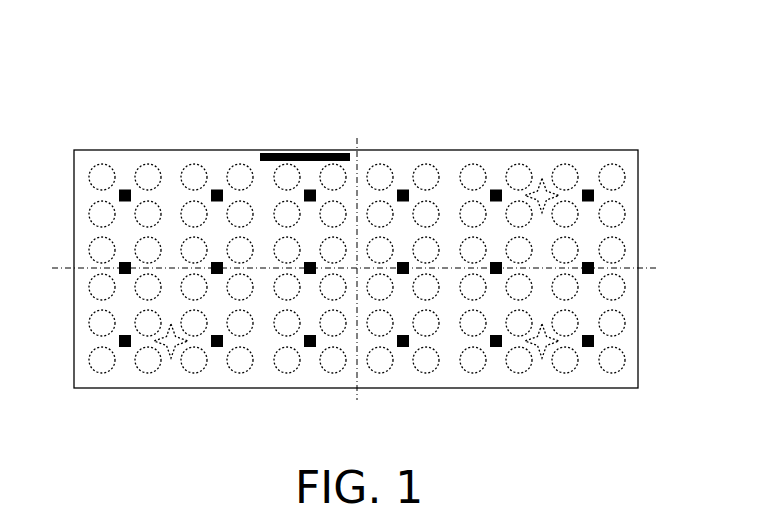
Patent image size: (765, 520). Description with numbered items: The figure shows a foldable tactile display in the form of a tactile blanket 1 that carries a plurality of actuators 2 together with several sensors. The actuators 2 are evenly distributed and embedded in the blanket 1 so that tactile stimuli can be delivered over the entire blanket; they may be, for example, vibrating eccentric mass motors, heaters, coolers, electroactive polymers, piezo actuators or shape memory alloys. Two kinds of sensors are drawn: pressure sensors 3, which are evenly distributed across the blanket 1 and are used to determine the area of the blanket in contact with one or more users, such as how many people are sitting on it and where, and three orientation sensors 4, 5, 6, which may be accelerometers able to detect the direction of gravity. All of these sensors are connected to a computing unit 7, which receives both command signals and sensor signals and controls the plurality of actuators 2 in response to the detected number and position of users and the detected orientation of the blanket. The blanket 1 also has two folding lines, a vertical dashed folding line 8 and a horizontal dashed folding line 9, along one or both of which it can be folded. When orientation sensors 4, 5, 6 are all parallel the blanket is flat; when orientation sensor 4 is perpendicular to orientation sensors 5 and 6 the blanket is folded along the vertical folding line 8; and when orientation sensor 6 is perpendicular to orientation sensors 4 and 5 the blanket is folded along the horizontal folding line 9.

The tactile blanket 1 is at (84, 96).
The actuators 2 is at (612, 165).
The pressure sensors 3 is at (496, 189).
The orientation sensor 4 is at (172, 357).
The orientation sensor 5 is at (548, 357).
The orientation sensor 6 is at (541, 185).
The computing unit 7 is at (270, 151).
The vertical folding line 8 is at (356, 140).
The horizontal folding line 9 is at (650, 268).